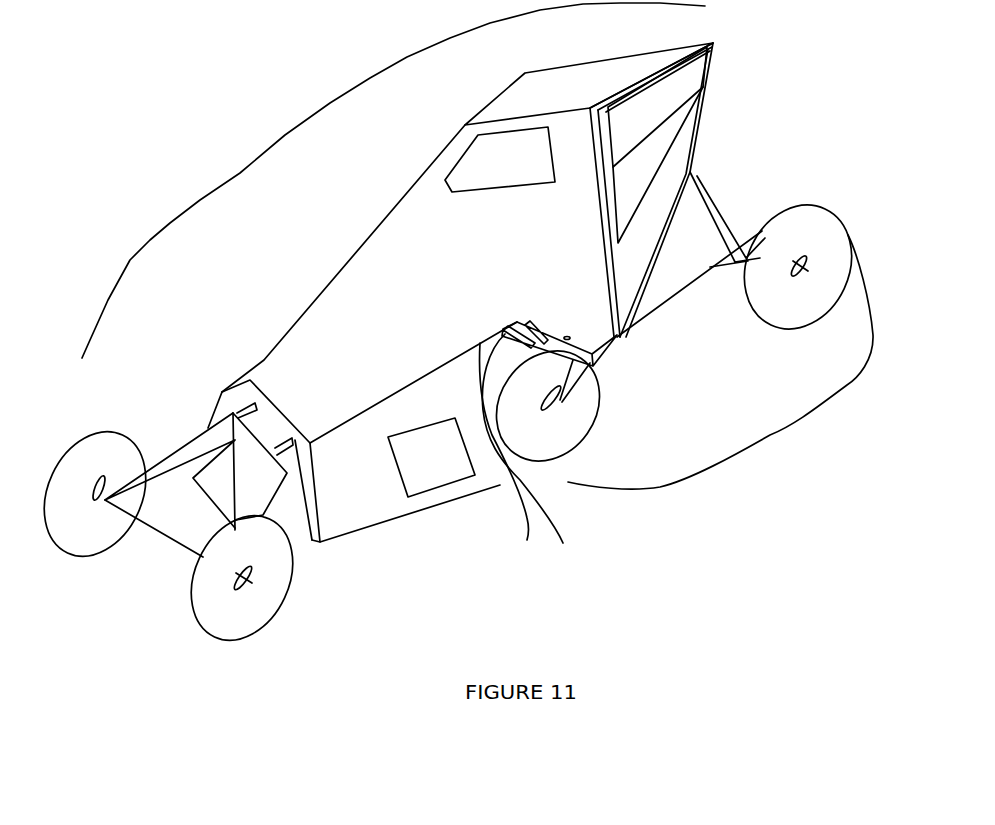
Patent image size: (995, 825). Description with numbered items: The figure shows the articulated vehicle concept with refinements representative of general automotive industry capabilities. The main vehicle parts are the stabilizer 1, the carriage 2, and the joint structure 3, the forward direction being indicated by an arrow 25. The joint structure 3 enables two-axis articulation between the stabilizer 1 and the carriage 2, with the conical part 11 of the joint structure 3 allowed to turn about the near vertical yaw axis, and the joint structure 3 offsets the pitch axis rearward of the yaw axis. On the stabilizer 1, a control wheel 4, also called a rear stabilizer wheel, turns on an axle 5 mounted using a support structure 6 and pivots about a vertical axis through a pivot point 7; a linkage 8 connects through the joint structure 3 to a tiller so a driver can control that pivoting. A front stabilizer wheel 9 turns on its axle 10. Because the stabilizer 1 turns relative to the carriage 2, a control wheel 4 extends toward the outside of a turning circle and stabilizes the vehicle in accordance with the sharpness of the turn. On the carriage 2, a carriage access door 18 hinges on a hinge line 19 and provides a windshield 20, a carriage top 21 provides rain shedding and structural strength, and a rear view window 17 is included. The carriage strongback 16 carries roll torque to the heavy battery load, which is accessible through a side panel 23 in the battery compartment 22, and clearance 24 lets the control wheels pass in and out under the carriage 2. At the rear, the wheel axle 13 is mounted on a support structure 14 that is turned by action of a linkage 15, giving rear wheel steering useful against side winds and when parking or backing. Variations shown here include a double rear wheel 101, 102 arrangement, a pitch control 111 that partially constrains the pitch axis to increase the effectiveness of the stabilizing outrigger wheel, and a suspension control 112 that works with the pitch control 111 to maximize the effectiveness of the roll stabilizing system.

The stabilizer 1 is at (770, 437).
The carriage 2 is at (346, 92).
The joint structure 3 is at (687, 235).
The control wheel 4 is at (582, 427).
The axle 5 is at (545, 400).
The support structure 6 is at (585, 338).
The pivot point 7 is at (593, 345).
The linkage 8 is at (522, 442).
The front stabilizer wheel 9 is at (787, 327).
The axle 10 is at (835, 283).
The conical part 11 is at (757, 172).
The axle 13 is at (147, 530).
The support structure 14 is at (172, 463).
The linkage 15 is at (283, 480).
The carriage strongback 16 is at (373, 237).
The rear view window 17 is at (495, 170).
The carriage access door 18 is at (657, 137).
The hinge line 19 is at (697, 112).
The windshield 20 is at (690, 78).
The carriage top 21 is at (625, 79).
The battery compartment 22 is at (413, 514).
The side panel 23 is at (438, 465).
The clearance 24 is at (412, 436).
The arrow 25 is at (697, 158).
The double rear wheel 101 is at (110, 538).
The double rear wheel 102 is at (193, 600).
The pitch control 111 is at (672, 142).
The suspension control 112 is at (222, 392).